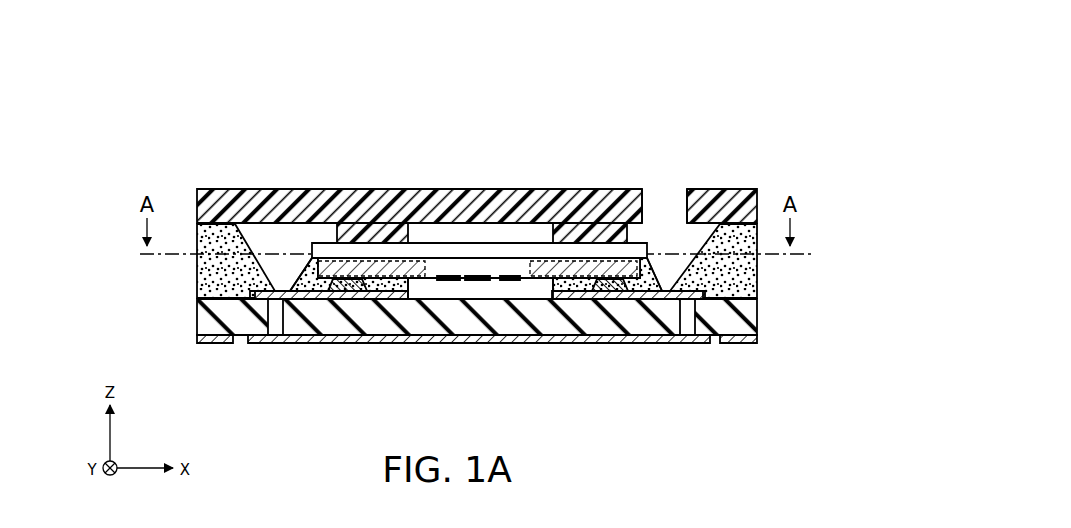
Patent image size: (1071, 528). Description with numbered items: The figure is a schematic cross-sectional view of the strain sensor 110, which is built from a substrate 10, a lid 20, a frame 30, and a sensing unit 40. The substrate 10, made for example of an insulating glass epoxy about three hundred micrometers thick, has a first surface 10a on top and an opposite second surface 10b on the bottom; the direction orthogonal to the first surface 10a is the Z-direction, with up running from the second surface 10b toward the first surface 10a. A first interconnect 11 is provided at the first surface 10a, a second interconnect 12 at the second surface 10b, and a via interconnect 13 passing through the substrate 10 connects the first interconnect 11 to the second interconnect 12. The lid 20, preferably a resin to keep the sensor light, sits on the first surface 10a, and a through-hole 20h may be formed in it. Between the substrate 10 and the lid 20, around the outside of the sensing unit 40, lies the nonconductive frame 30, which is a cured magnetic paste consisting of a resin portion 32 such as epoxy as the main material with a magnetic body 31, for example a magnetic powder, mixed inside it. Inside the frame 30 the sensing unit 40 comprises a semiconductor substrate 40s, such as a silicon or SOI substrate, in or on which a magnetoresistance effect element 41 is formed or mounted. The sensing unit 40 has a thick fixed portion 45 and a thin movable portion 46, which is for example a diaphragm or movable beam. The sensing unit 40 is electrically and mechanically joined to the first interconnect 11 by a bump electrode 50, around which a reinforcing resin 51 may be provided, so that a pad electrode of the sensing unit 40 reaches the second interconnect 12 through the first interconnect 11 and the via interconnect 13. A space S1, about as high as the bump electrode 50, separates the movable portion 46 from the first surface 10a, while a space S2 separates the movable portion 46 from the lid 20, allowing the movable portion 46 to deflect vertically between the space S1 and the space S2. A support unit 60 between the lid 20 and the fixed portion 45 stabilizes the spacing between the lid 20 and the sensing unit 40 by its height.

The strain sensor 110 is at (692, 128).
The lid 20 is at (725, 200).
The through-hole 20h is at (665, 215).
The support unit 60 is at (385, 225).
The frame 30 is at (465, 272).
The magnetic body 31 is at (215, 262).
The resin portion 32 is at (215, 288).
The resin 51 is at (292, 280).
The sensing unit 40 is at (443, 177).
The semiconductor substrate 40s is at (353, 247).
The magnetoresistance effect element 41 is at (448, 275).
The fixed portion 45 is at (323, 248).
The space S2 is at (517, 243).
The space S1 is at (500, 292).
The movable portion 46 is at (460, 280).
The bump electrode 50 is at (353, 285).
The first interconnect 11 is at (305, 297).
The second interconnect 12 is at (335, 344).
The via interconnect 13 is at (275, 312).
The substrate 10 is at (505, 352).
The first surface 10a is at (730, 302).
The second surface 10b is at (712, 342).